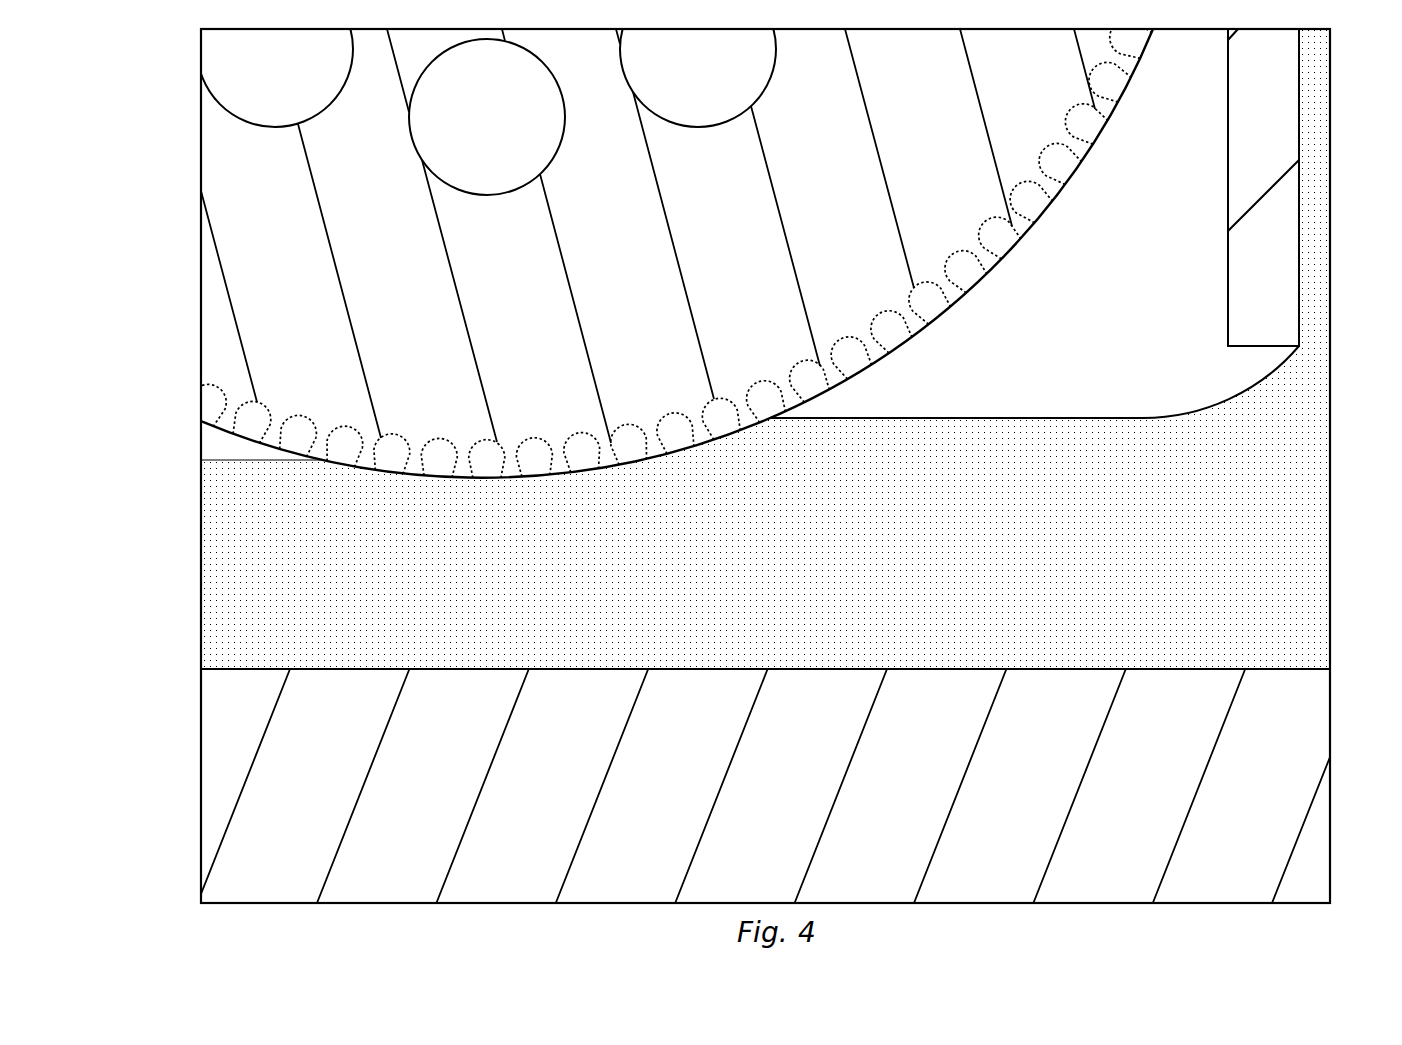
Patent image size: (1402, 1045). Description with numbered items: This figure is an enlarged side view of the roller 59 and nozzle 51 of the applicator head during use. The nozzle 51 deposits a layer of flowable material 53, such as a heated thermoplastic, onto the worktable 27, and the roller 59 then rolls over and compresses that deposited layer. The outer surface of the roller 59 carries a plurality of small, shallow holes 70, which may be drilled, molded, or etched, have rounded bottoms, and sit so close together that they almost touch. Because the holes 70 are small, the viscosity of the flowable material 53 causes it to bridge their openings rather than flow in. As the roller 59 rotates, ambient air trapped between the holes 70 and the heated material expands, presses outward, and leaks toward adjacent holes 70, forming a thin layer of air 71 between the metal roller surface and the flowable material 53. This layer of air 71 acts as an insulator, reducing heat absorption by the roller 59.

The worktable 27 is at (1291, 742).
The nozzle 51 is at (1228, 160).
The flowable material 53 is at (1160, 417).
The roller 59 is at (965, 295).
The holes 70 is at (340, 447).
The layer of air 71 is at (347, 467).